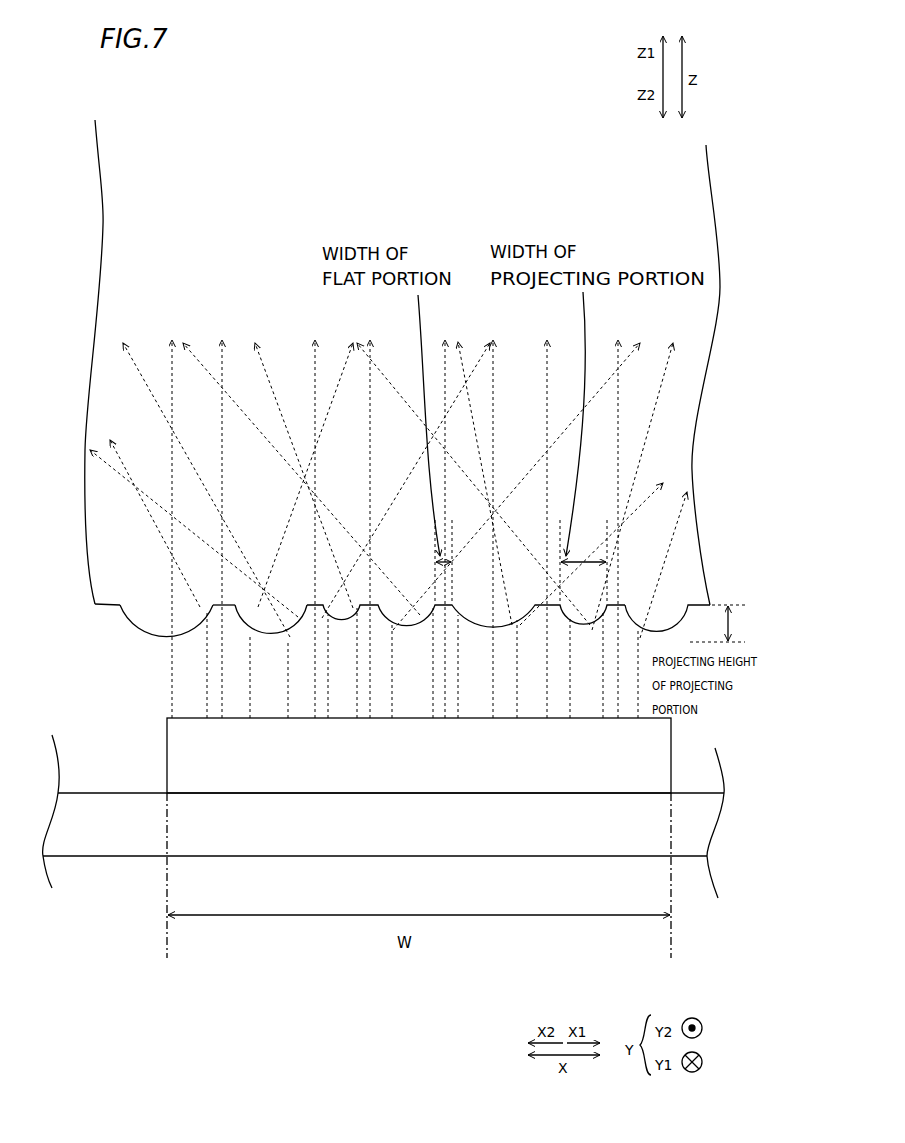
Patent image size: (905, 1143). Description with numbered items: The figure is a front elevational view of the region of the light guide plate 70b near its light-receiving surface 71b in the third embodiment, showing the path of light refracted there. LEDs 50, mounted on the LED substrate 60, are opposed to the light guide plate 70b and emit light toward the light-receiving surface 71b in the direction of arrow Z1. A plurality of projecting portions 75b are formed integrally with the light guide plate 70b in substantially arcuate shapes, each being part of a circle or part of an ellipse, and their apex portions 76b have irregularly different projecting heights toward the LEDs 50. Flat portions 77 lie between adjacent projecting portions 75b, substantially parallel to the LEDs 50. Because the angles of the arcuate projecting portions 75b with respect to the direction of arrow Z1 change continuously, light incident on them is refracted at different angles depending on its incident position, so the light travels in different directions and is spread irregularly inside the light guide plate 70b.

The light guide plate 70b is at (118, 222).
The light-receiving surface 71b is at (88, 604).
The projecting portions 75b is at (168, 638).
The apex portions 76b is at (217, 618).
The flat portions 77 is at (226, 607).
The LEDs 50 is at (167, 755).
The LED substrate 60 is at (130, 857).